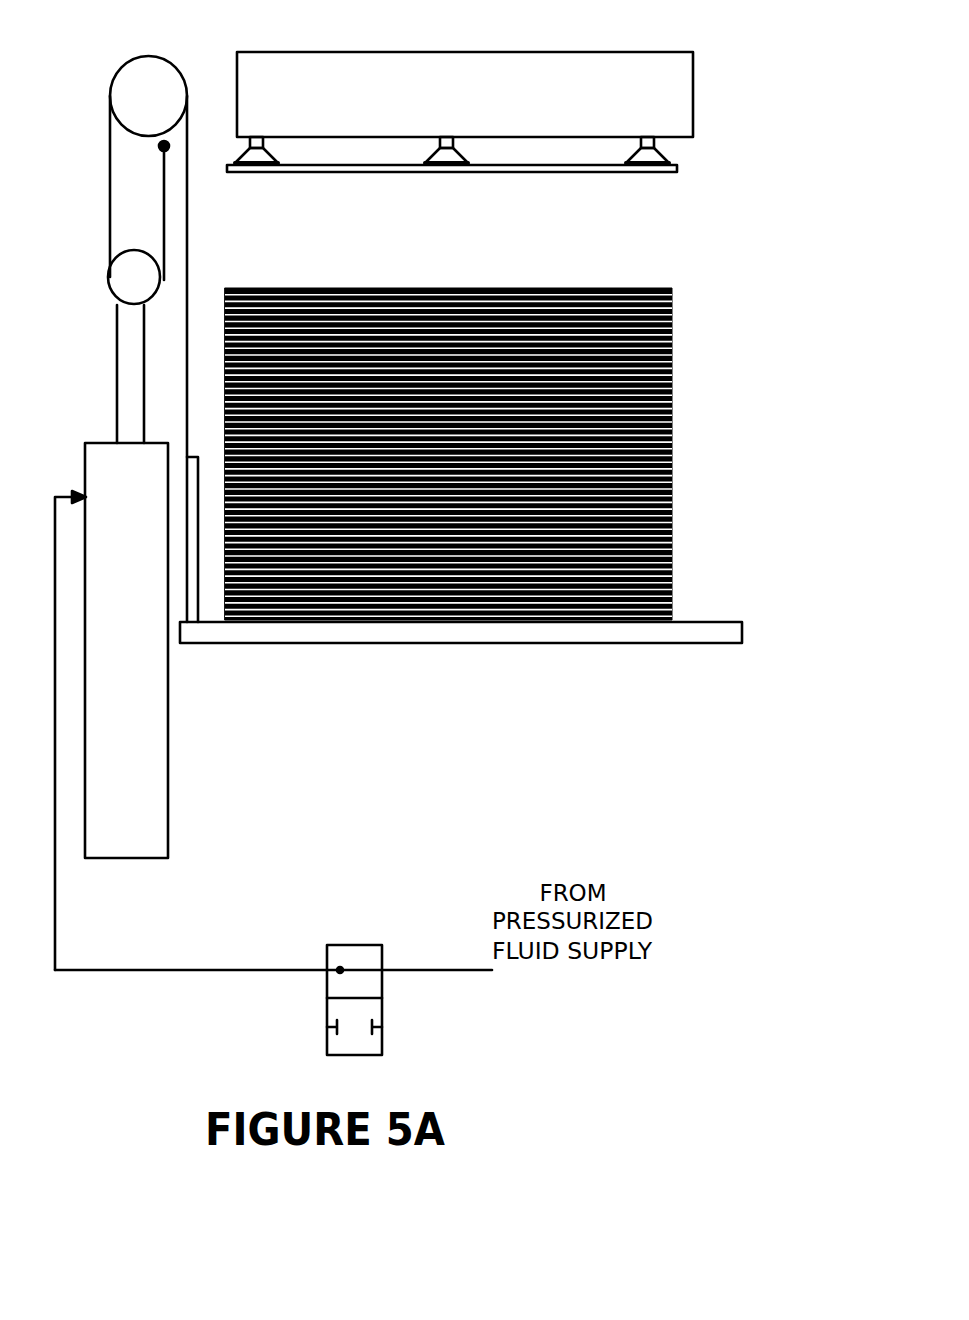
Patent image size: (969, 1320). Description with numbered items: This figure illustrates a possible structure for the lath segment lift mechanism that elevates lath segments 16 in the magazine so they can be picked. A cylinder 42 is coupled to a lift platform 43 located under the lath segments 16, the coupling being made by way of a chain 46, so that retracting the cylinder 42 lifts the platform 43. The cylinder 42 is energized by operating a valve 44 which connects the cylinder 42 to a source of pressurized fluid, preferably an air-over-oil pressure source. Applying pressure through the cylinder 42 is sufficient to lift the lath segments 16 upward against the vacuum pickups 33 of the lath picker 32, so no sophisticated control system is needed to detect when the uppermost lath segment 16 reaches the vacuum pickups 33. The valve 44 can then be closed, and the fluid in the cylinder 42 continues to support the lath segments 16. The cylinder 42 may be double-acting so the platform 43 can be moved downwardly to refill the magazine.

The lath segments 16 is at (563, 173).
The lath picker 32 is at (297, 60).
The vacuum pick-up 33 is at (447, 158).
The cylinder 42 is at (93, 472).
The lift platform 43 is at (360, 643).
The valve 44 is at (352, 945).
The chain 46 is at (108, 222).